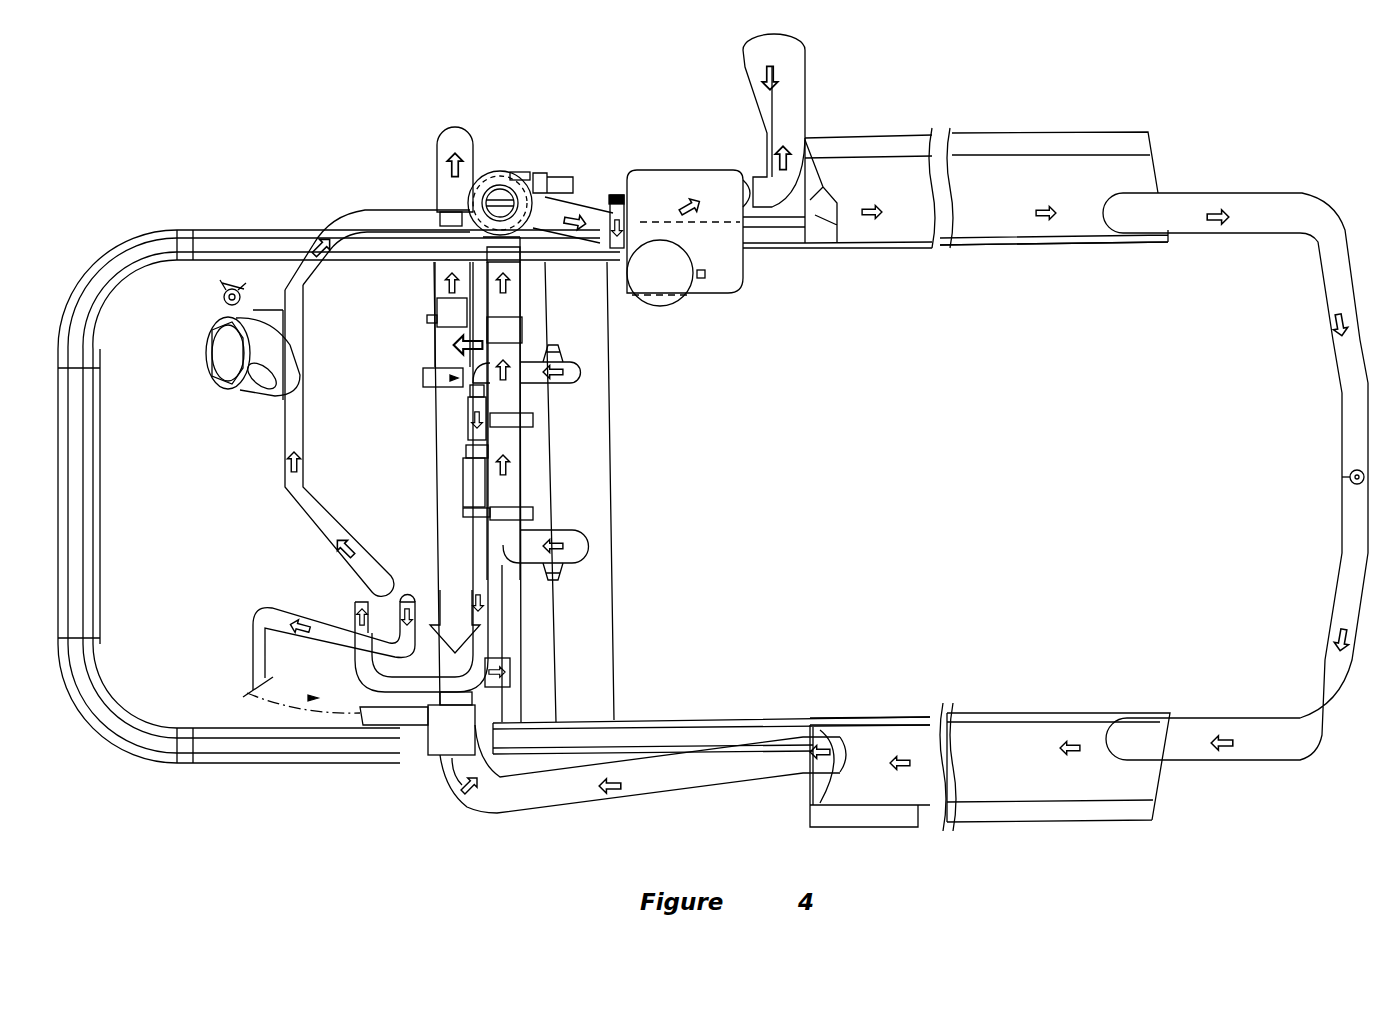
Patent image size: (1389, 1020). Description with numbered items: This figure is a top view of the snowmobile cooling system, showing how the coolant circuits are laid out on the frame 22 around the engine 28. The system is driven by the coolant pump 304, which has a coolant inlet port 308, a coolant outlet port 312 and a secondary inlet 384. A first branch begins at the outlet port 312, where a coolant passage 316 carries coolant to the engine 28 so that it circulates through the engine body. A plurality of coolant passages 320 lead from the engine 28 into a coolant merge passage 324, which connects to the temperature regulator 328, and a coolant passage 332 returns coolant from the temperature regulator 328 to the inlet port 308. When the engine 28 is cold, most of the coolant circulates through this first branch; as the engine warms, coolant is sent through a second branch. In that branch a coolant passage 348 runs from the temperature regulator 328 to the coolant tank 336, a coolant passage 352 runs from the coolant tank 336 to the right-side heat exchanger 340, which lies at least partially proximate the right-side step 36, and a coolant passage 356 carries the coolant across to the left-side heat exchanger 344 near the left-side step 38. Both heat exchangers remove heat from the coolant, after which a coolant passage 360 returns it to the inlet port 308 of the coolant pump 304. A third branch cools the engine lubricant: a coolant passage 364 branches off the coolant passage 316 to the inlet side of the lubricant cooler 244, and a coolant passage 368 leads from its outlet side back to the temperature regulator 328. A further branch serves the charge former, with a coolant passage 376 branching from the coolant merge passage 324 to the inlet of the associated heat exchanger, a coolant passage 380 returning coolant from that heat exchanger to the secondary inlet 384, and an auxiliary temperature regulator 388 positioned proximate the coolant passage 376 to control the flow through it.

The frame assembly 22 is at (228, 747).
The engine 28 is at (624, 553).
The right-side step 36 is at (1044, 142).
The left-side step 38 is at (1033, 730).
The lubricant cooler 244 is at (218, 385).
The coolant pump 304 is at (438, 745).
The coolant inlet port 308 is at (455, 780).
The coolant outlet port 312 is at (512, 698).
The coolant passage 316 is at (497, 658).
The coolant passages 320 is at (565, 546).
The coolant merge passage 324 is at (513, 300).
The temperature regulator 328 is at (516, 172).
The coolant passage 332 is at (463, 140).
The coolant tank 336 is at (733, 275).
The right-side heat exchanger 340 is at (1003, 228).
The left-side heat exchanger 344 is at (980, 762).
The coolant passage 348 is at (594, 212).
The coolant passage 352 is at (797, 82).
The coolant passage 356 is at (1345, 525).
The coolant passage 360 is at (686, 775).
The coolant passage 364 is at (287, 447).
The coolant passage 368 is at (340, 228).
The coolant passage 376 is at (463, 413).
The coolant passage 380 is at (243, 672).
The secondary inlet 384 is at (402, 740).
The auxiliary temperature regulator 388 is at (470, 475).